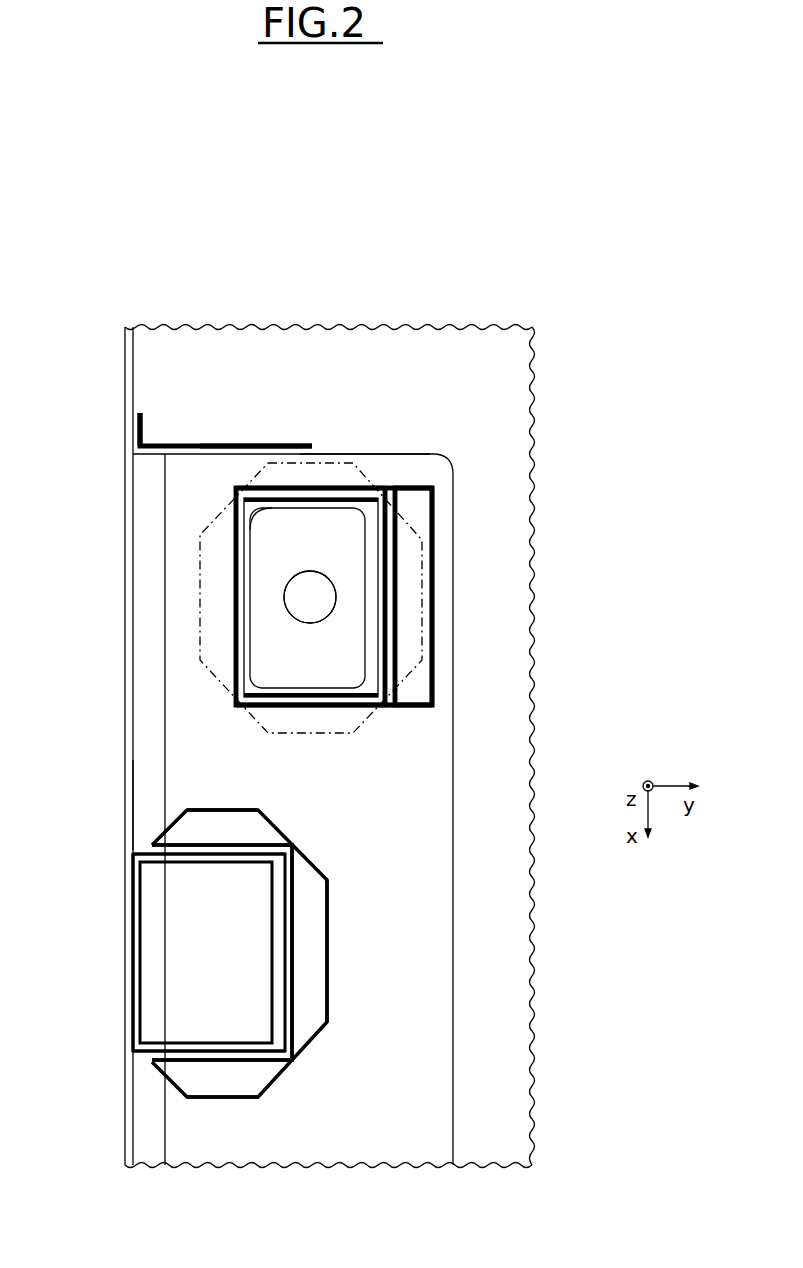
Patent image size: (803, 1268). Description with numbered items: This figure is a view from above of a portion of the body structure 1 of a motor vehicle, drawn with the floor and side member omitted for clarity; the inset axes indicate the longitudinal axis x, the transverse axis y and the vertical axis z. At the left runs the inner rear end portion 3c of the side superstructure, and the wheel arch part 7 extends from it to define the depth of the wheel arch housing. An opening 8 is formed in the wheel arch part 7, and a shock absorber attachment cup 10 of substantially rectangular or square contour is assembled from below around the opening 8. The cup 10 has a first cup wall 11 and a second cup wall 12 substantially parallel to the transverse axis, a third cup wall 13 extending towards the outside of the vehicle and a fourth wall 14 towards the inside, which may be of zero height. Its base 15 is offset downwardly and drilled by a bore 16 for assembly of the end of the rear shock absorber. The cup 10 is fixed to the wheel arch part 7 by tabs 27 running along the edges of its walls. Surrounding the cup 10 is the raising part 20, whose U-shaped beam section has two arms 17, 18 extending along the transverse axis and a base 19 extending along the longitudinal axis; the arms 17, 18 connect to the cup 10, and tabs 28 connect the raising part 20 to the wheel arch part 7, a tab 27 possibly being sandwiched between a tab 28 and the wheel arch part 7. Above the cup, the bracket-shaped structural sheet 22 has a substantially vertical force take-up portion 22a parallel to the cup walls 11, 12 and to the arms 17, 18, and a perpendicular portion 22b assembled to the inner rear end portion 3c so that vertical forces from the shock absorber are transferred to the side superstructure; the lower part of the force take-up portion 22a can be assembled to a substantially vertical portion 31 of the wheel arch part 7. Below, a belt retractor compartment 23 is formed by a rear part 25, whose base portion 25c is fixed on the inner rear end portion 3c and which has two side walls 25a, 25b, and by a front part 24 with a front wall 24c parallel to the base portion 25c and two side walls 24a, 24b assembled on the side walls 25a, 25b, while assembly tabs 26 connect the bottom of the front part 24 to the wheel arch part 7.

The body structure 1 is at (143, 300).
The inner rear end portion 3c is at (128, 541).
The wheel arch part 7 is at (434, 462).
The opening 8 is at (326, 494).
The shock absorber attachment cup 10 is at (338, 660).
The first cup wall 11 is at (258, 516).
The second cup wall 12 is at (300, 496).
The third cup wall 13 is at (275, 620).
The fourth wall 14 is at (352, 603).
The base 15 is at (365, 708).
The bore 16 is at (323, 609).
The arm of the U 17 is at (340, 705).
The arm of the U 18 is at (354, 498).
The base of the U 19 is at (392, 645).
The raising part 20 is at (435, 580).
The structural sheet 22 is at (177, 440).
The force take-up portion 22a is at (241, 443).
The portion 22b is at (132, 435).
The belt retractor compartment 23 is at (153, 811).
The front part 24 is at (331, 920).
The side wall 24a is at (245, 1062).
The side wall 24b is at (245, 850).
The front wall 24c is at (290, 956).
The rear part 25 is at (122, 1002).
The side wall 25a is at (145, 1053).
The side wall 25b is at (150, 853).
The base portion 25c is at (137, 962).
The assembly tabs 26 is at (226, 812).
The tabs 27 is at (312, 466).
The tabs 28 is at (415, 507).
The substantially vertical portion 31 is at (404, 452).